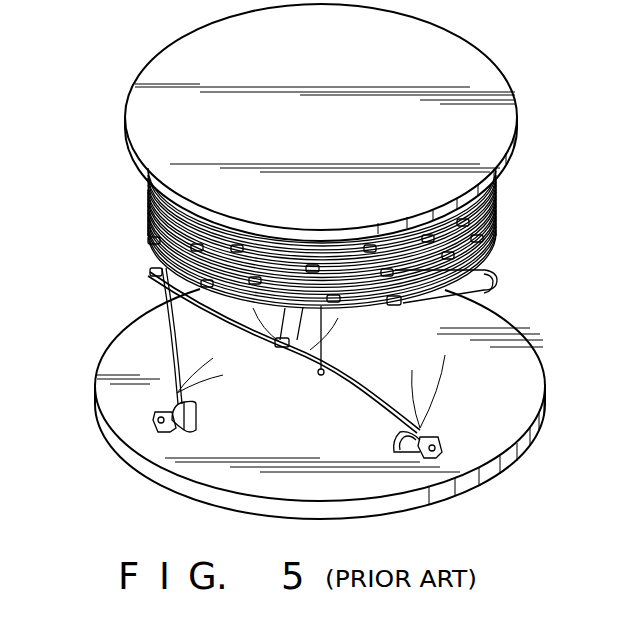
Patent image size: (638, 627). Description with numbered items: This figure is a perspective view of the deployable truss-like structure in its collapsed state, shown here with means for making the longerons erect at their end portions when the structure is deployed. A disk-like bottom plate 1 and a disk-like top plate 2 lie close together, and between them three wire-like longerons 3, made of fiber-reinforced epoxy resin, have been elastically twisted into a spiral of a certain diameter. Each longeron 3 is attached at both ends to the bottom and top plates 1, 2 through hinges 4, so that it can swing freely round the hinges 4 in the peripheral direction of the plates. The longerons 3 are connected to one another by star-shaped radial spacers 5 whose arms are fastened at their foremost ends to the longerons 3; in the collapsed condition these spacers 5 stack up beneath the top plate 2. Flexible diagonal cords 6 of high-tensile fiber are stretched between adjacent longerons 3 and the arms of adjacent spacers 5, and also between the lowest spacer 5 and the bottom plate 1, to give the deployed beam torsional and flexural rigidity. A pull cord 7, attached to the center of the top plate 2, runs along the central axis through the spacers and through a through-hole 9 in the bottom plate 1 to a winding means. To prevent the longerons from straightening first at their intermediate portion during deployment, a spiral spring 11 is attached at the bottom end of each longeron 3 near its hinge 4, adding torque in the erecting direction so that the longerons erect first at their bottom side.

The bottom plate 1 is at (546, 392).
The top plate 2 is at (518, 116).
The longeron 3 is at (497, 216).
The hinge 4 is at (153, 420).
The radial spacer 5 is at (274, 346).
The diagonal cord 6 is at (257, 318).
The pull cord 7 is at (313, 351).
The through-hole 9 is at (317, 378).
The spiral spring 11 is at (192, 424).